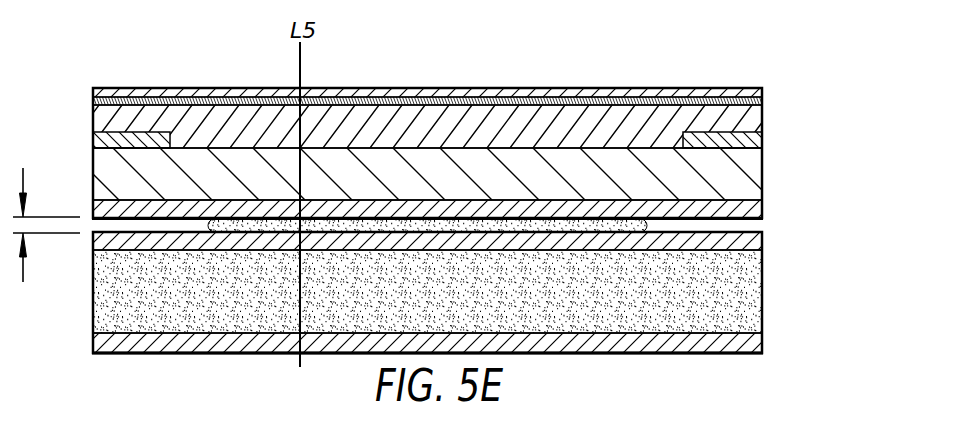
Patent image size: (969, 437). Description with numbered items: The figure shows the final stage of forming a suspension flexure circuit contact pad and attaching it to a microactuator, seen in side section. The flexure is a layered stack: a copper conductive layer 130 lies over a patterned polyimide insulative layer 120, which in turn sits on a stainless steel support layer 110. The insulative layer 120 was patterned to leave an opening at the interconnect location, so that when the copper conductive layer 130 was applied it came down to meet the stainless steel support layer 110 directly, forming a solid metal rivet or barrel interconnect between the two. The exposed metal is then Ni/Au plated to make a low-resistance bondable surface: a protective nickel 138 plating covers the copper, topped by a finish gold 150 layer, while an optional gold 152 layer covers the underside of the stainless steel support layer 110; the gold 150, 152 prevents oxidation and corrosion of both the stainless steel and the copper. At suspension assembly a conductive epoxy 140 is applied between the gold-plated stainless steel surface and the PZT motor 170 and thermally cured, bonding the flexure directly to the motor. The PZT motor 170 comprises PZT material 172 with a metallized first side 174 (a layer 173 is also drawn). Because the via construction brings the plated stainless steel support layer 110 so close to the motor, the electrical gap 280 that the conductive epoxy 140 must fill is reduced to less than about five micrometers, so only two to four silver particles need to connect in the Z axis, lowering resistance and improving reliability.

The stainless steel support layer 110 is at (762, 172).
The insulative layer 120 is at (762, 138).
The copper conductive layer 130 is at (762, 117).
The nickel 138 is at (762, 100).
The gold 150 is at (714, 87).
The gold 152 is at (762, 214).
The conductive epoxy 140 is at (590, 227).
The PZT motor 170 is at (454, 308).
The PZT material 172 is at (108, 303).
The upper skin layer of lower assembly 173 is at (97, 243).
The metallized first side 174 is at (98, 354).
The electrical gap 280 is at (23, 182).